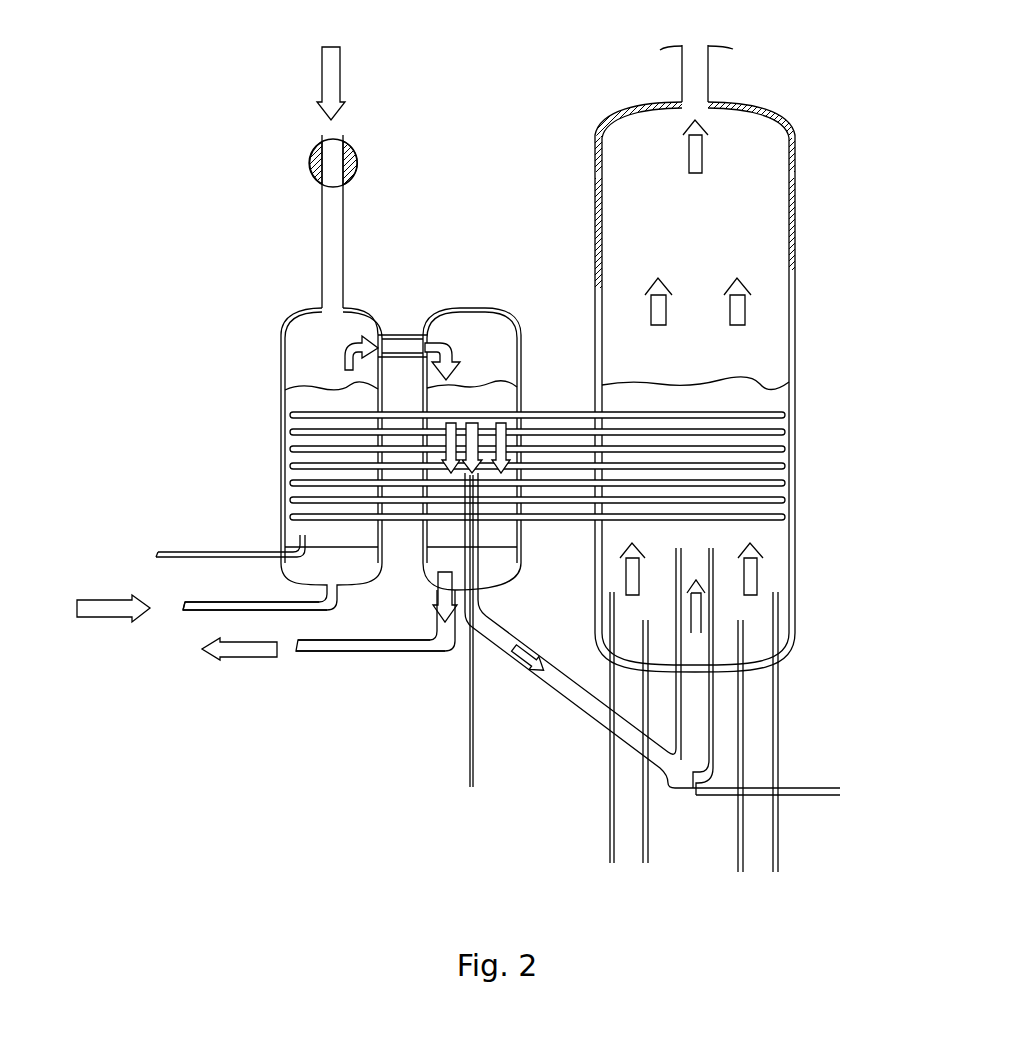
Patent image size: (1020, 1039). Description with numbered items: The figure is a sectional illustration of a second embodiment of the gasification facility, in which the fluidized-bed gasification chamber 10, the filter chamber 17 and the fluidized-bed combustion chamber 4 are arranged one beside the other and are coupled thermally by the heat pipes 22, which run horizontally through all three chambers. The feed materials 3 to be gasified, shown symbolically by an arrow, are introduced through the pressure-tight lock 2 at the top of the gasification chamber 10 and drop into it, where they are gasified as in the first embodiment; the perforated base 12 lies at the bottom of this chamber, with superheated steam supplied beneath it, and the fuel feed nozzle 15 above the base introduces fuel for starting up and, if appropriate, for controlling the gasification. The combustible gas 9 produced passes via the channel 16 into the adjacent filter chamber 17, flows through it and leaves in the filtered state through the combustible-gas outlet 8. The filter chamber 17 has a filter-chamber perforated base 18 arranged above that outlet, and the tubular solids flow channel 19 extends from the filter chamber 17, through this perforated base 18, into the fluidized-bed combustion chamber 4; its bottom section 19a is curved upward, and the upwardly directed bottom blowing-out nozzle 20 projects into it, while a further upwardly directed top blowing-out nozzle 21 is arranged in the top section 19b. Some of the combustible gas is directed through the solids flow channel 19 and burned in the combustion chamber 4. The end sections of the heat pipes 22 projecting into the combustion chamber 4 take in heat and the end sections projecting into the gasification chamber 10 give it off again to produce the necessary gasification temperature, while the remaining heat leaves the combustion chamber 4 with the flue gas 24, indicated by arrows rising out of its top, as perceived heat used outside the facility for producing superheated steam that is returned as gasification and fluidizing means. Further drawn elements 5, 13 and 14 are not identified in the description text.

The pressure-tight lock 2 is at (360, 155).
The feed materials 3 is at (335, 83).
The fluidized-bed combustion chamber 4 is at (772, 293).
The pipe 5 is at (781, 718).
The combustible-gas outlet 8 is at (343, 643).
The combustible gas 9 is at (368, 340).
The fluidized-bed gasification chamber 10 is at (302, 355).
The perforated base 12 is at (364, 560).
The outlet pipe 13 is at (187, 612).
The flow arrow 14 is at (125, 608).
The fuel feed nozzle 15 is at (218, 548).
The channel 16 is at (410, 340).
The filter chamber 17 is at (475, 340).
The filter-chamber perforated base 18 is at (496, 552).
The solids flow channel 19 is at (590, 732).
The bottom section of the solids flow channel 19a is at (700, 748).
The top section of the solids flow channel 19b is at (480, 470).
The bottom blowing-out nozzle 20 is at (790, 805).
The top blowing-out nozzle 21 is at (467, 762).
The heat pipes 22 is at (568, 410).
The flue gas 24 is at (687, 153).